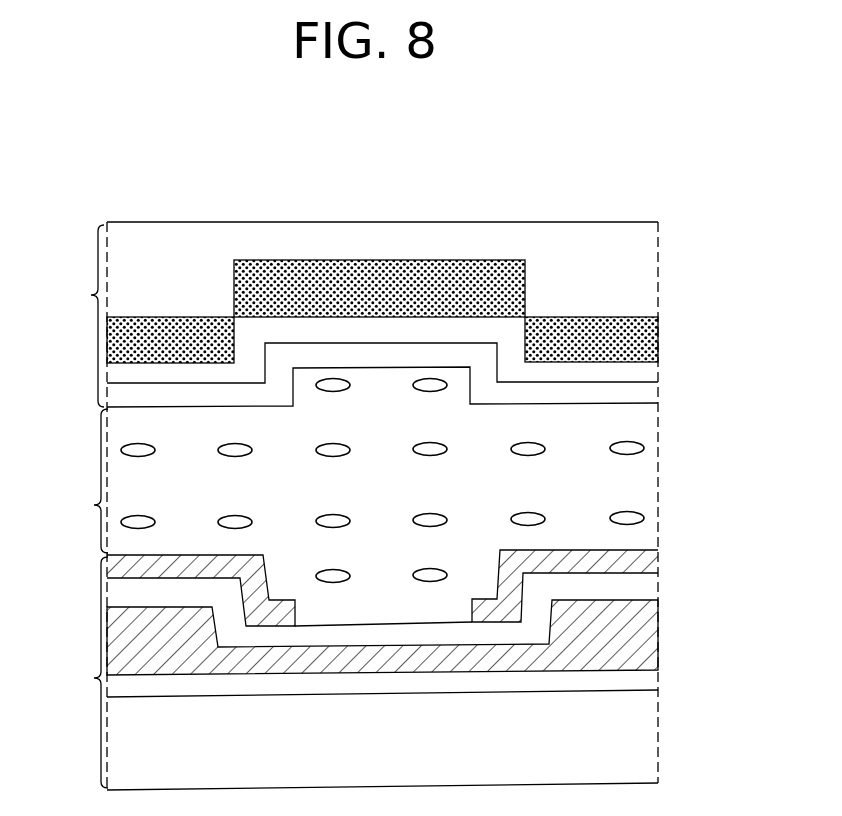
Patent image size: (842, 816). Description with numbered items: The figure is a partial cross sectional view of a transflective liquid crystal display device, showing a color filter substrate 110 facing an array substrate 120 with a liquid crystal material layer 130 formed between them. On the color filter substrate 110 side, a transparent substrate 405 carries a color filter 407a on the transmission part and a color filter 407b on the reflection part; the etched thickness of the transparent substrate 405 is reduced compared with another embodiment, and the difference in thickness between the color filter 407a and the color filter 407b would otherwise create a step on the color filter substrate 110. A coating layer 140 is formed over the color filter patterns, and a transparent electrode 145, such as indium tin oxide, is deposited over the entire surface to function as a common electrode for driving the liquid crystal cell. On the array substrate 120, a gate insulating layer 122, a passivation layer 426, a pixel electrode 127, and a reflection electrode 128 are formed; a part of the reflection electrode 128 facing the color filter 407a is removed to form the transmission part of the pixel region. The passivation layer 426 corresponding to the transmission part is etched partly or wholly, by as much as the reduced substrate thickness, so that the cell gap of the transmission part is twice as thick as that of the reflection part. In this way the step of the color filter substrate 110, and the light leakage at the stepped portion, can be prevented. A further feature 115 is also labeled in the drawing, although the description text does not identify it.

The transparent substrate 405 is at (650, 287).
The color filter on the transmission part 407a is at (377, 262).
The color filter on the reflection part 407b is at (650, 320).
The coating layer 140 is at (650, 365).
The transparent electrode 145 is at (650, 388).
The color filter substrate 110 is at (73, 316).
The liquid crystal material layer 130 is at (345, 481).
The array substrate 120 is at (77, 672).
The reflection electrode 128 is at (650, 557).
The pixel electrode 127 is at (650, 588).
The passivation layer 426 is at (650, 637).
The gate insulating layer 122 is at (650, 675).
The lower insulating substrate 115 is at (650, 735).